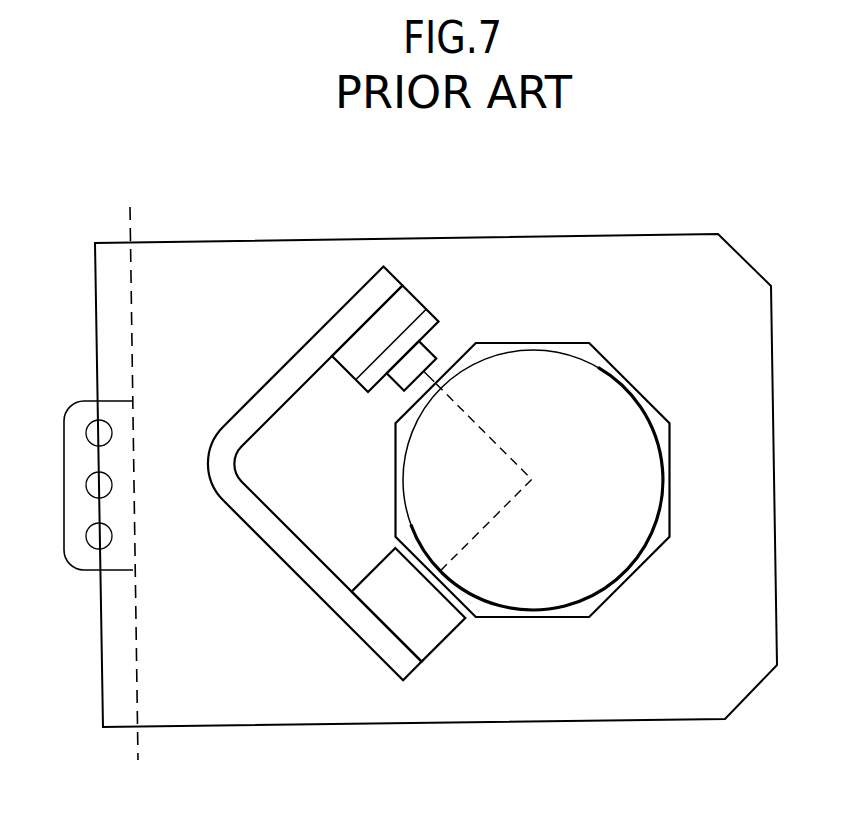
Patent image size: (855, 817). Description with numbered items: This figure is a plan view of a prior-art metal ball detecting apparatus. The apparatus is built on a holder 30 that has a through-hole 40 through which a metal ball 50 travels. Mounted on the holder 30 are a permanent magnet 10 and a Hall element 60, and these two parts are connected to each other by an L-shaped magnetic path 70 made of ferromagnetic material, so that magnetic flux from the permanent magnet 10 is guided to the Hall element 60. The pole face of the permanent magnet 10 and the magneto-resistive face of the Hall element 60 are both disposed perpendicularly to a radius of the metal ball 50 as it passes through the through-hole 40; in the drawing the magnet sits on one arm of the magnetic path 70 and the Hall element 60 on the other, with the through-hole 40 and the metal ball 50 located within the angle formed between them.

The permanent magnet 10 is at (435, 633).
The holder 30 is at (555, 235).
The through-hole 40 is at (625, 372).
The metal ball 50 is at (595, 567).
The Hall element 60 is at (445, 310).
The L-shaped magnetic path 70 is at (352, 632).